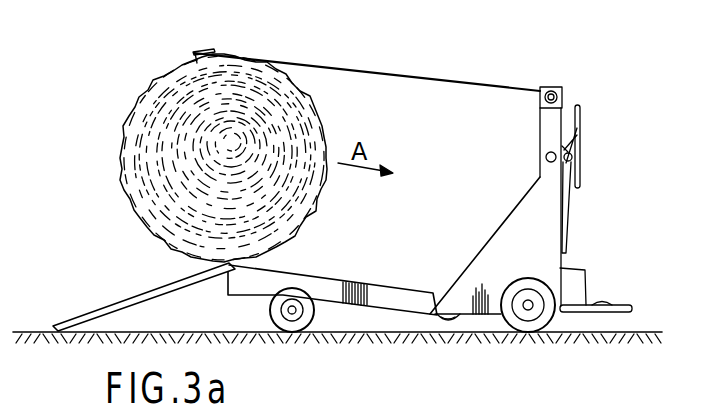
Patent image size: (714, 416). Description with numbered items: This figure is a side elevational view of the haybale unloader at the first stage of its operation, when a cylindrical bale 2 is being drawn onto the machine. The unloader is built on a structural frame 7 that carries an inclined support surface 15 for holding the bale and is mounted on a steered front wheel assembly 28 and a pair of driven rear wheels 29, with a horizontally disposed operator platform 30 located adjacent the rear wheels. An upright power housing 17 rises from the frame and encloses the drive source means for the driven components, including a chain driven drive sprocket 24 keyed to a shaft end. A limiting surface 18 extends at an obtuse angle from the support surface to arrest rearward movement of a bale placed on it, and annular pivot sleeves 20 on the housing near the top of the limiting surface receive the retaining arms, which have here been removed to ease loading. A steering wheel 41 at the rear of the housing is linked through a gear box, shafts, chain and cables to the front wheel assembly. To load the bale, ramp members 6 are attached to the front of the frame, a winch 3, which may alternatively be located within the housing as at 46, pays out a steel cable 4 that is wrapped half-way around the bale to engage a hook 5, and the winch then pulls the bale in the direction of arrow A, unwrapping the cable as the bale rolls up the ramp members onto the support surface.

The cylindrical bale 2 is at (110, 132).
The winch 3 is at (545, 86).
The steel cable 4 is at (396, 70).
The hook 5 is at (207, 50).
The ramp members 6 is at (120, 300).
The structural frame 7 is at (402, 302).
The support surface 15 is at (319, 280).
The power housing 17 is at (545, 250).
The limiting surface 18 is at (481, 239).
The pivot sleeves 20 is at (545, 158).
The drive sprocket 24 is at (448, 322).
The steered front wheel assembly 28 is at (297, 314).
The driven rear wheels 29 is at (528, 310).
The operator platform 30 is at (622, 304).
The steering wheel 41 is at (580, 122).
The winch location within power housing 46 is at (540, 126).